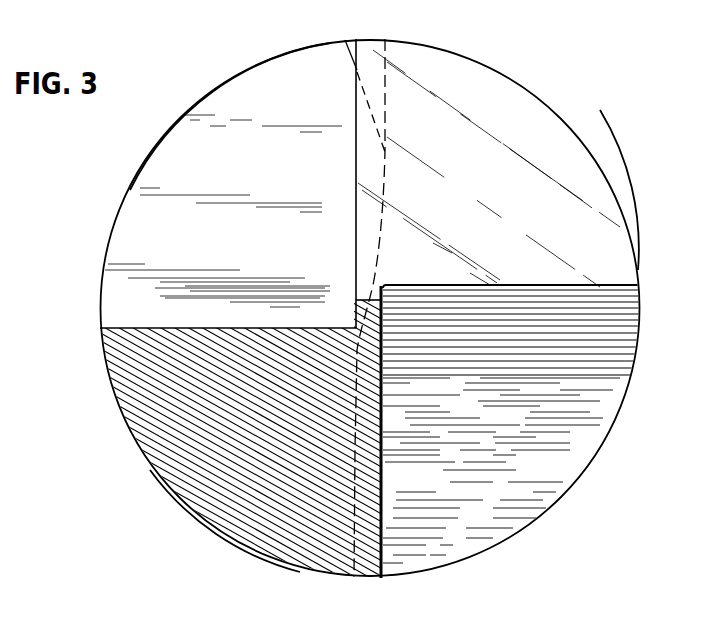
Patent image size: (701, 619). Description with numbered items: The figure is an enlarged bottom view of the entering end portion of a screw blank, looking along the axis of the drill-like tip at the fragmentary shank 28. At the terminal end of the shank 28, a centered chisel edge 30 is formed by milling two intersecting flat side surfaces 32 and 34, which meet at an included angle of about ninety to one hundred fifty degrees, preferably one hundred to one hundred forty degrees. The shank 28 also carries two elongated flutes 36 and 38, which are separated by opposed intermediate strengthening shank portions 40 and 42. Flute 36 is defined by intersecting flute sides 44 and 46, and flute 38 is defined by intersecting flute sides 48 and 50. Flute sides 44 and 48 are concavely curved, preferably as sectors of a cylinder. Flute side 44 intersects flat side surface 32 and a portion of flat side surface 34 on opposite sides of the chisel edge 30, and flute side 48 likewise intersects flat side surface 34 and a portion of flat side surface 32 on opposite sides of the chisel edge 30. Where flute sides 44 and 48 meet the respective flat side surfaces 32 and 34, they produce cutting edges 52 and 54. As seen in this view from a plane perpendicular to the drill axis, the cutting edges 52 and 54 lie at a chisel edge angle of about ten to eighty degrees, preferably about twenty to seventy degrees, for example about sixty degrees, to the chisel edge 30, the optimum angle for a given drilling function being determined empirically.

The shank 28 is at (467, 55).
The chisel edge 30 is at (358, 312).
The flat side surface 32 is at (168, 452).
The flat side surface 34 is at (567, 152).
The flute 36 is at (551, 462).
The flute 38 is at (173, 158).
The intermediate strengthening shank portion 40 is at (218, 529).
The intermediate strengthening shank portion 42 is at (627, 216).
The flute side 44 is at (370, 510).
The flute side 46 is at (617, 369).
The flute side 48 is at (378, 240).
The flute side 50 is at (259, 82).
The cutting edge 52 is at (383, 399).
The cutting edge 54 is at (356, 148).